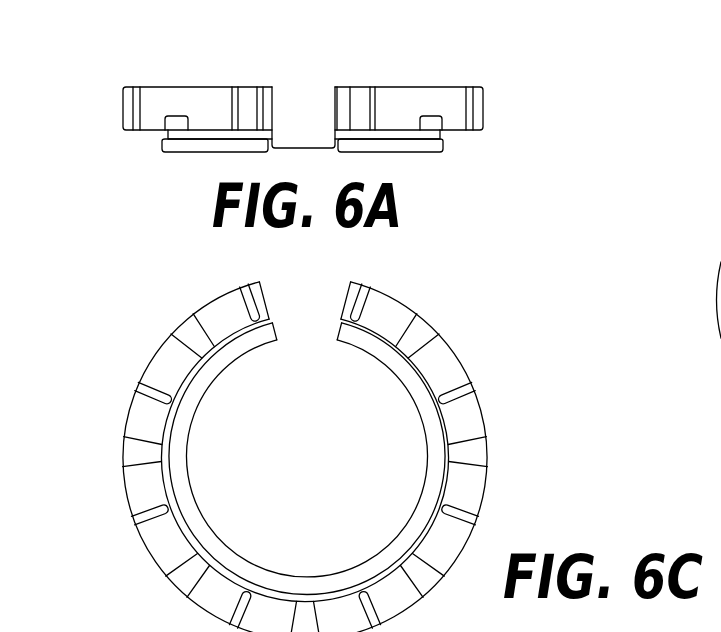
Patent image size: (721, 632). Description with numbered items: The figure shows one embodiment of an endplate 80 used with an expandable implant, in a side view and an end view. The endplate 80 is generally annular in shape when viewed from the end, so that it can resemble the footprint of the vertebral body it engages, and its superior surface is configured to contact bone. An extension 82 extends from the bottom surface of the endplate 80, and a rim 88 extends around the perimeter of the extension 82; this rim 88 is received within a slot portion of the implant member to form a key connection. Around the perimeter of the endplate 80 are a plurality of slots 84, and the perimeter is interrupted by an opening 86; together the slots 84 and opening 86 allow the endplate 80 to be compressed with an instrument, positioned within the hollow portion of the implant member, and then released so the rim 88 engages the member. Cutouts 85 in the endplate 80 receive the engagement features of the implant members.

In FIG. 6A, the endplate 80 is at (351, 140).
In FIG. 6C, the endplate 80 is at (361, 434).
In FIG. 6A, the extension 82 is at (445, 149).
In FIG. 6C, the slots 84 is at (370, 290).
In FIG. 6C, the cutouts 85 is at (423, 323).
In FIG. 6C, the opening 86 is at (284, 307).
In FIG. 6A, the rim 88 is at (162, 150).